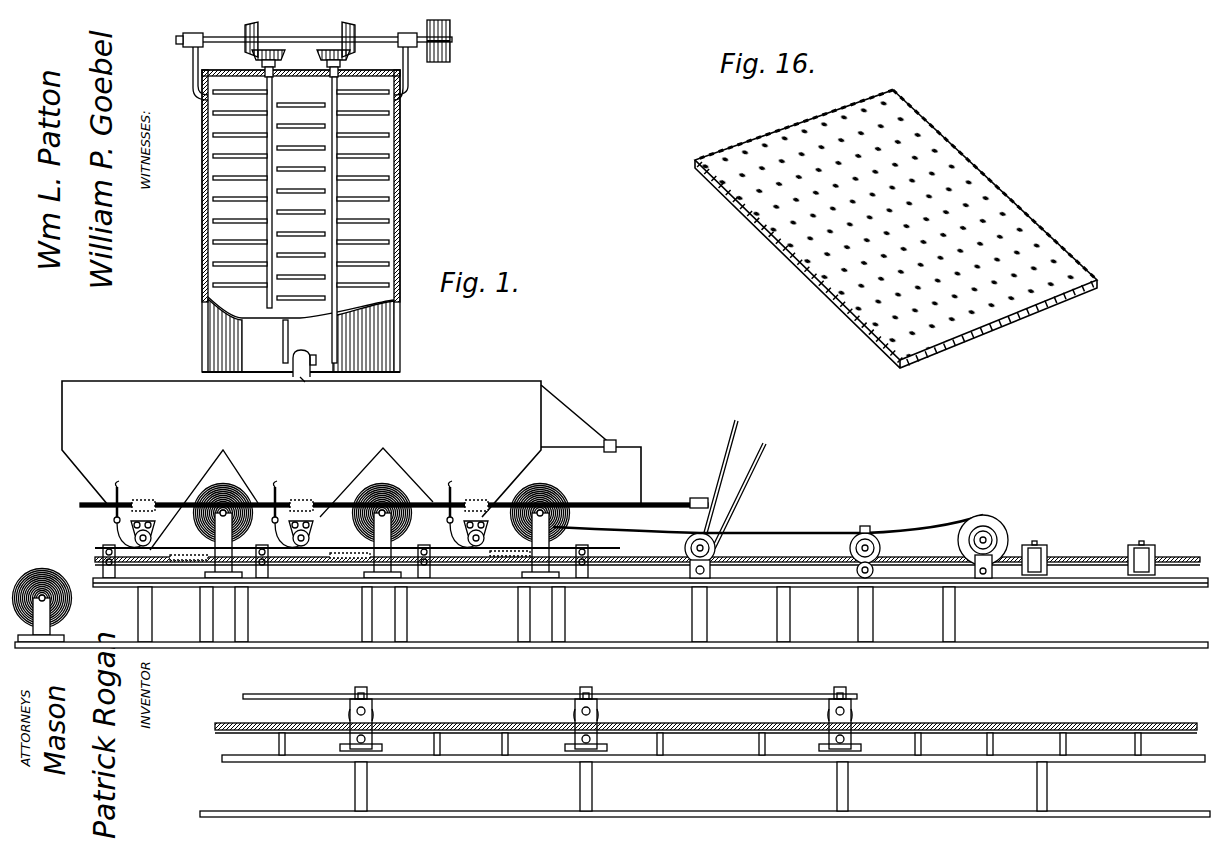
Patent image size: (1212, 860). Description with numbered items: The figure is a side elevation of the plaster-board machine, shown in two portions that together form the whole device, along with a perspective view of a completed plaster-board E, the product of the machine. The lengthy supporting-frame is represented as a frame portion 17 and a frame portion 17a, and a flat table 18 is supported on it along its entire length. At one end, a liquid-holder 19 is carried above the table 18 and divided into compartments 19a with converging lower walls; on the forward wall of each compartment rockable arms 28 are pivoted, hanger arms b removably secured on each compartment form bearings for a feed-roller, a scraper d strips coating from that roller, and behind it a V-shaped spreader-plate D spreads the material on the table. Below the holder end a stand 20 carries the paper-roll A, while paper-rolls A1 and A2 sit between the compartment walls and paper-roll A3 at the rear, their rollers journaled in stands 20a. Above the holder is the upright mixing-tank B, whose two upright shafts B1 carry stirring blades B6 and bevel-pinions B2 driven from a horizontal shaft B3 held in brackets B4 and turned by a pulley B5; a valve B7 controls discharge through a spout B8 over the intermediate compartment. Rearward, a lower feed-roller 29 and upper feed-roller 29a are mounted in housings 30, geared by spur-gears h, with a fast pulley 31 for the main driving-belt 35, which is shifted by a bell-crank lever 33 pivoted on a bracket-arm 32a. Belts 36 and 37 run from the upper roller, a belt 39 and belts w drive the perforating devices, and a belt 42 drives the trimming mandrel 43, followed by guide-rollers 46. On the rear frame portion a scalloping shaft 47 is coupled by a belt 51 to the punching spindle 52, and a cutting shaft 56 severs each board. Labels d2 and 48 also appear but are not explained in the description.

In FIG. 1, the mixing-tank B is at (400, 212).
In FIG. 1, the upright rotatable shafts B1 is at (262, 90).
In FIG. 1, the bevel-pinion B2 is at (252, 60).
In FIG. 1, the horizontal shaft B3 is at (320, 35).
In FIG. 1, the brackets B4 is at (193, 70).
In FIG. 1, the pulley B5 is at (446, 62).
In FIG. 1, the stirring rods or blades B6 is at (301, 195).
In FIG. 1, the valve B7 is at (310, 336).
In FIG. 1, the spout B8 is at (305, 380).
In FIG. 1, the holder 19 is at (301, 449).
In FIG. 1, the compartments 19a is at (316, 490).
In FIG. 1, the arms 28 is at (121, 479).
In FIG. 1, the bracket-arm 32a is at (618, 444).
In FIG. 1, the bell-crank lever 33 is at (660, 505).
In FIG. 1, the paper-roll A is at (42, 575).
In FIG. 1, the paper-roll A1 is at (204, 514).
In FIG. 1, the paper-roll A2 is at (376, 513).
In FIG. 1, the paper-roll A3 is at (548, 487).
In FIG. 1, the hanger plates or arms b is at (115, 541).
In FIG. 1, the scraper d is at (411, 543).
In FIG. 1, the roller bracket d2 is at (165, 543).
In FIG. 1, the belt w is at (428, 488).
In FIG. 1, the spreader-plate D is at (195, 565).
In FIG. 1, the stands 20a is at (545, 565).
In FIG. 1, the endless belt 39 is at (509, 543).
In FIG. 1, the frame portion 17 is at (177, 587).
In FIG. 1, the table 18 is at (93, 580).
In FIG. 1, the stand 20 is at (40, 637).
In FIG. 1, the main driving-belt 35 is at (745, 497).
In FIG. 1, the upper feed-roller 29a is at (715, 524).
In FIG. 1, the pulley 31 is at (715, 552).
In FIG. 1, the lower feed-roller 29 is at (706, 578).
In FIG. 1, the housings 30 is at (690, 576).
In FIG. 1, the spur-gear h is at (695, 585).
In FIG. 1, the belt 37 is at (645, 524).
In FIG. 1, the belt 36 is at (830, 532).
In FIG. 1, the belt 42 is at (940, 520).
In FIG. 1, the mandrel 43 is at (1000, 548).
In FIG. 1, the guide-rollers 46 is at (1040, 558).
In FIG. 1, the guide box 48 is at (1148, 558).
In FIG. 1, the belt 51 is at (475, 694).
In FIG. 1, the frame portion 17a is at (268, 762).
In FIG. 1, the shaft 47 is at (372, 712).
In FIG. 1, the transverse spindle 52 is at (590, 699).
In FIG. 1, the shaft 56 is at (829, 710).
In FIG. 16, the plaster-board material E is at (855, 243).